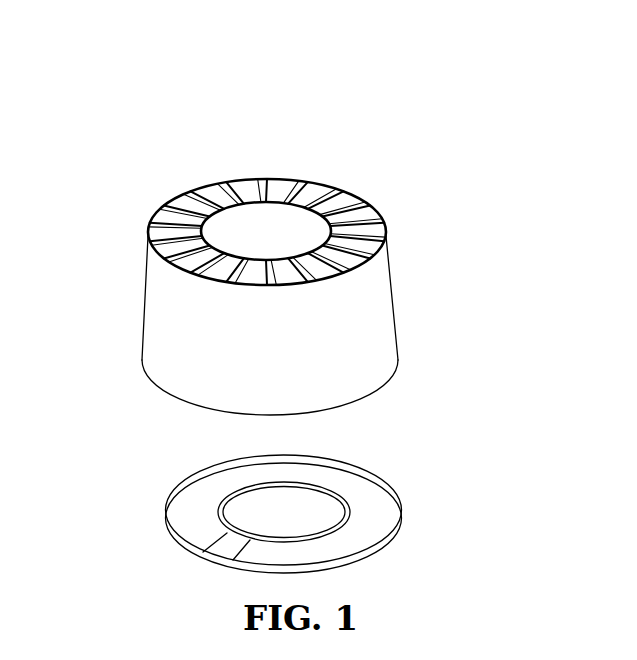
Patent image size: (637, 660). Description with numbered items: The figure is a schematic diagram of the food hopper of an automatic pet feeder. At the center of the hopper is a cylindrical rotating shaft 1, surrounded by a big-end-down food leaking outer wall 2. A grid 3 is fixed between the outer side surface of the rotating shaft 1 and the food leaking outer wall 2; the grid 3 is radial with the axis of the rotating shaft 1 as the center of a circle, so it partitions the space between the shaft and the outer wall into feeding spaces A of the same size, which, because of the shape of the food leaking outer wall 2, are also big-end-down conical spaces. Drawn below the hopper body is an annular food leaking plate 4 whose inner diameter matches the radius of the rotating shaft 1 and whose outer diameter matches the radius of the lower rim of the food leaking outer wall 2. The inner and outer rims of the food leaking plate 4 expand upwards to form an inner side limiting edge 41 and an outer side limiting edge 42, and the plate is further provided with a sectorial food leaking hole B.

The rotating shaft 1 is at (293, 178).
The food leaking outer wall 2 is at (356, 325).
The grid 3 is at (203, 236).
The food leaking plate 4 is at (328, 491).
The inner side limiting edge 41 is at (397, 455).
The outer side limiting edge 42 is at (375, 518).
The feeding spaces A is at (295, 214).
The food leaking hole B is at (222, 555).